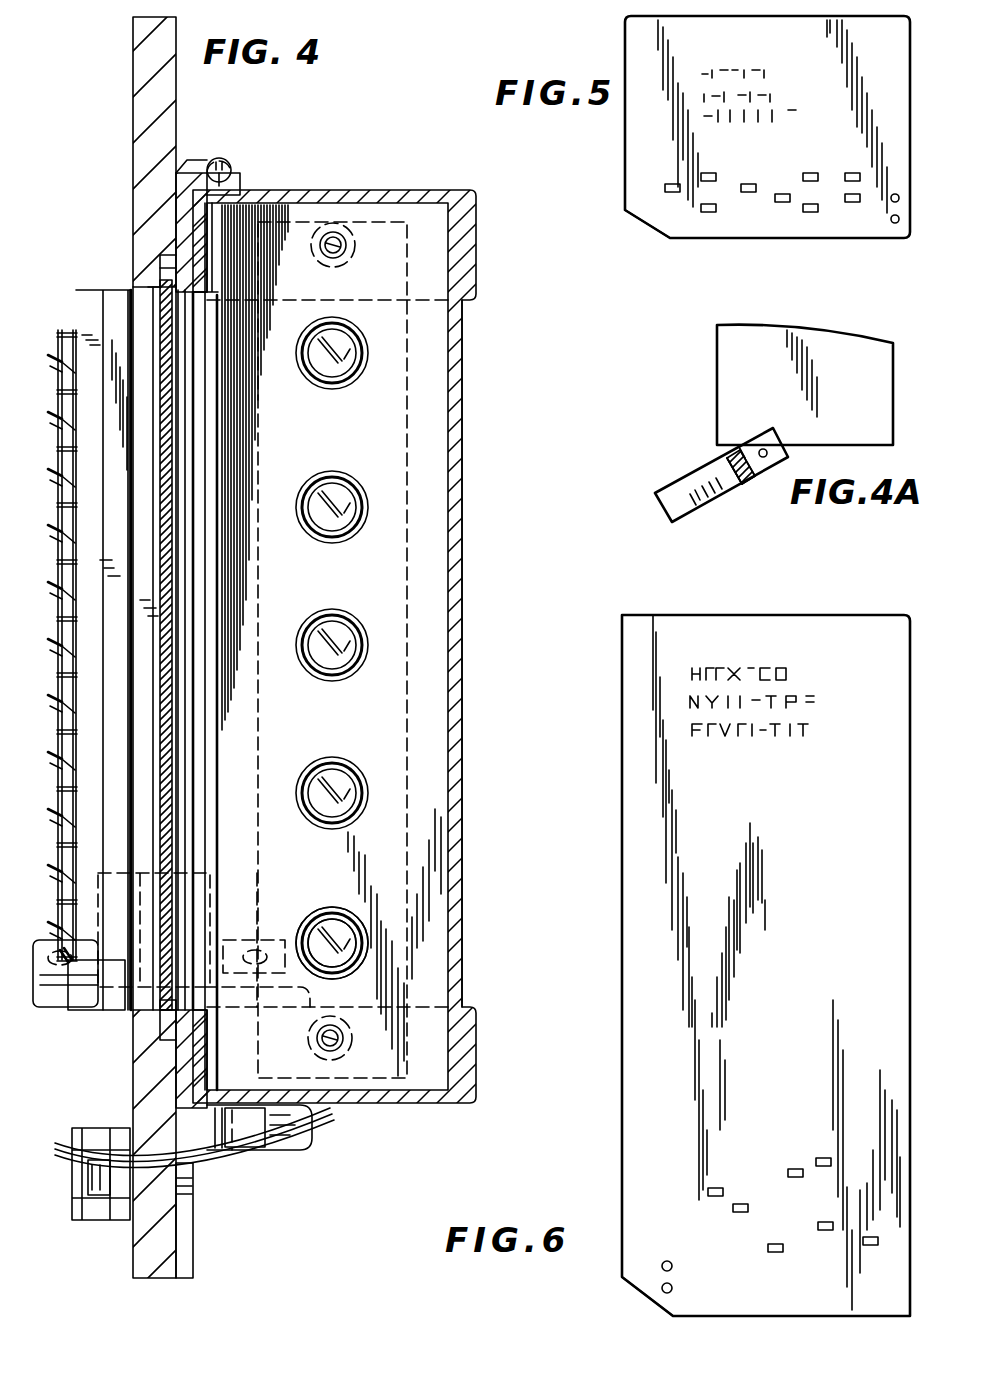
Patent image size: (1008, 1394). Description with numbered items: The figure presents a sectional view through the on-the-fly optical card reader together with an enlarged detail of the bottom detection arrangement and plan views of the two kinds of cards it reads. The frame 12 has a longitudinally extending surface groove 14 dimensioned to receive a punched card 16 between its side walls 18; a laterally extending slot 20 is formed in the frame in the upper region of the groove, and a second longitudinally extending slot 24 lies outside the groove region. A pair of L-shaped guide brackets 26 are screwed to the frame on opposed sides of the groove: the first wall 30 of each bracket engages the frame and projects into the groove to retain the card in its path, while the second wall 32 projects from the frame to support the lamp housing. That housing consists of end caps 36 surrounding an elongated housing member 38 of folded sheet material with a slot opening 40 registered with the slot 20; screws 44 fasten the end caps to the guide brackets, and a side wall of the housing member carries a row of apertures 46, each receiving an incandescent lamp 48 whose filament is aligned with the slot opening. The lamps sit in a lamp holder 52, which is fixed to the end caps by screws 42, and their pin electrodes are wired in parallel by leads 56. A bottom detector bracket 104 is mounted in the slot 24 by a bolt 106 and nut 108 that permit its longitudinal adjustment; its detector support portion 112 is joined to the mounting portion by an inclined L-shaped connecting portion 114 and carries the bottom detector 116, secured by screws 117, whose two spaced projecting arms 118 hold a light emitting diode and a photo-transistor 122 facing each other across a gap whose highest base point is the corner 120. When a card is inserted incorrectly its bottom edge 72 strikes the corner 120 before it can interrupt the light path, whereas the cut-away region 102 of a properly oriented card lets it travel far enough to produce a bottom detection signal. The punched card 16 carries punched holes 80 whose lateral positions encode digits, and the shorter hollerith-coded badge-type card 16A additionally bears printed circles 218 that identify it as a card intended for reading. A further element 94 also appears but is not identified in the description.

In FIG. 4, the frame 12 is at (133, 148).
In FIG. 4, the surface groove 14 is at (160, 281).
In FIG. 4, the punched card 16 is at (162, 322).
In FIG. 4A, the punched card 16 is at (717, 358).
In FIG. 6, the punched card 16 is at (622, 688).
In FIG. 5, the badge-type card 16A is at (625, 150).
In FIG. 4, the side walls 18 is at (160, 268).
In FIG. 4, the laterally extending slot 20 is at (118, 1004).
In FIG. 4, the second longitudinally extending slot 24 is at (196, 1214).
In FIG. 4, the guide brackets 26 is at (197, 152).
In FIG. 4, the first wall 30 is at (183, 228).
In FIG. 4, the second wall 32 is at (241, 183).
In FIG. 4, the end caps 36 is at (410, 192).
In FIG. 4, the housing member 38 is at (463, 330).
In FIG. 4, the slot opening 40 is at (210, 290).
In FIG. 4, the screws 42 is at (336, 1044).
In FIG. 4, the screws 44 is at (224, 160).
In FIG. 4, the apertures 46 is at (304, 918).
In FIG. 4, the incandescent lamp 48 is at (328, 920).
In FIG. 4, the lamp holder 52 is at (414, 455).
In FIG. 4, the leads 56 is at (322, 1116).
In FIG. 5, the bottom edge 72 is at (696, 240).
In FIG. 4A, the bottom edge 72 is at (885, 448).
In FIG. 6, the bottom edge 72 is at (678, 1320).
In FIG. 5, the punched holes 80 is at (672, 184).
In FIG. 6, the punched holes 80 is at (716, 1188).
In FIG. 4, the card rail 94 is at (75, 332).
In FIG. 5, the cut-away region 102 is at (651, 232).
In FIG. 6, the cut-away region 102 is at (622, 1280).
In FIG. 4, the bottom detector bracket 104 is at (298, 1166).
In FIG. 4, the bolt 106 is at (68, 1168).
In FIG. 4, the nut 108 is at (96, 1222).
In FIG. 4, the detector support portion 112 is at (62, 1012).
In FIG. 4A, the detector support portion 112 is at (738, 488).
In FIG. 4, the connecting portion 114 is at (306, 1148).
In FIG. 4A, the connecting portion 114 is at (690, 480).
In FIG. 4, the bottom detector 116 is at (245, 884).
In FIG. 4A, the bottom detector 116 is at (742, 490).
In FIG. 4, the screws 117 is at (254, 946).
In FIG. 4, the projecting arms 118 is at (100, 880).
In FIG. 4A, the projecting arms 118 is at (768, 478).
In FIG. 4, the corner 120 is at (222, 996).
In FIG. 4A, the corner 120 is at (742, 448).
In FIG. 4A, the photo-transistor 122 is at (770, 448).
In FIG. 5, the circles 218 is at (891, 219).